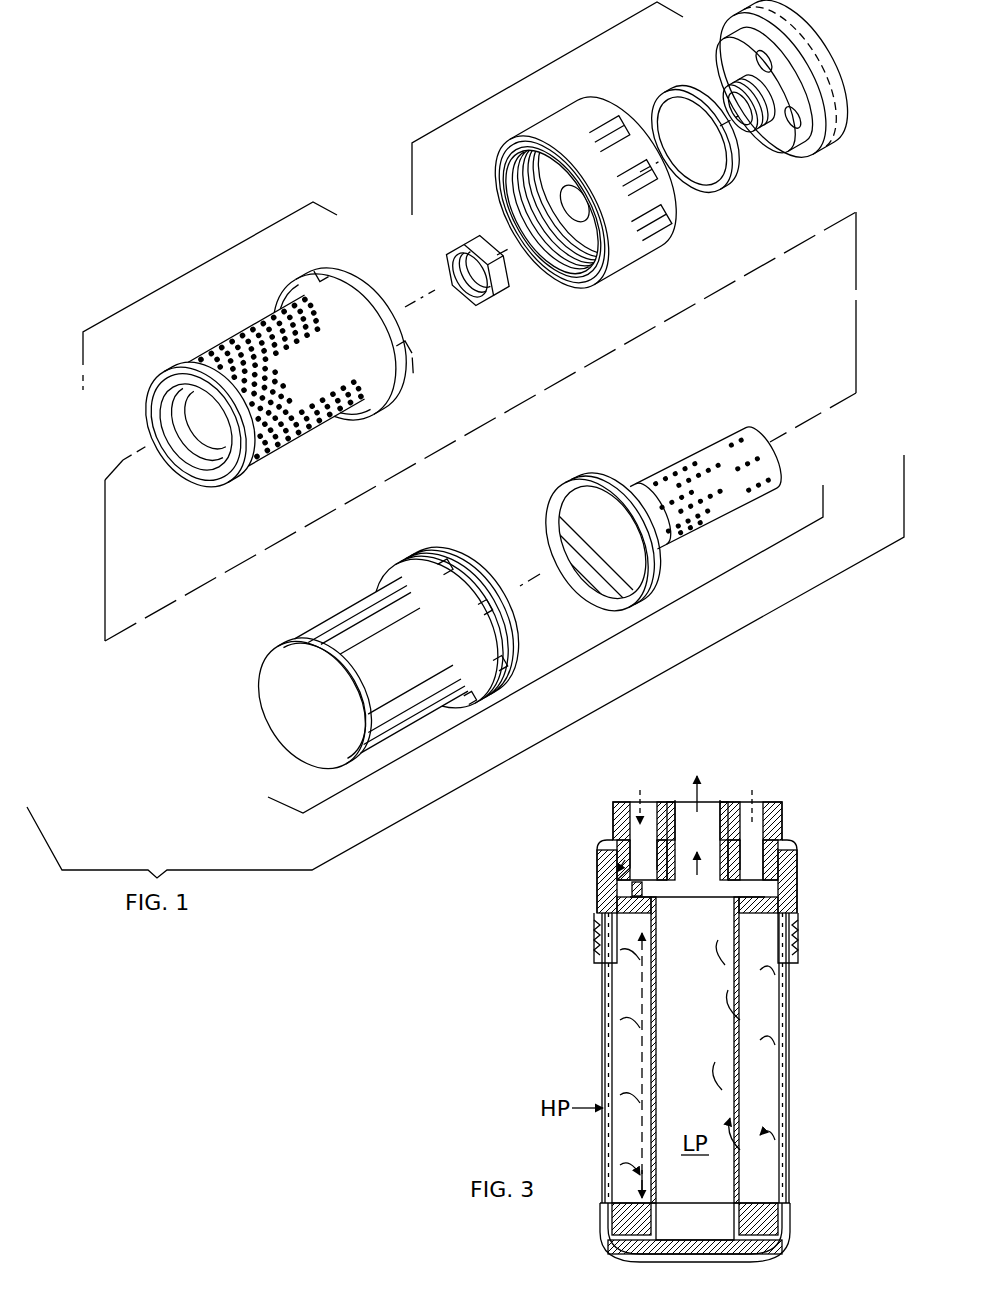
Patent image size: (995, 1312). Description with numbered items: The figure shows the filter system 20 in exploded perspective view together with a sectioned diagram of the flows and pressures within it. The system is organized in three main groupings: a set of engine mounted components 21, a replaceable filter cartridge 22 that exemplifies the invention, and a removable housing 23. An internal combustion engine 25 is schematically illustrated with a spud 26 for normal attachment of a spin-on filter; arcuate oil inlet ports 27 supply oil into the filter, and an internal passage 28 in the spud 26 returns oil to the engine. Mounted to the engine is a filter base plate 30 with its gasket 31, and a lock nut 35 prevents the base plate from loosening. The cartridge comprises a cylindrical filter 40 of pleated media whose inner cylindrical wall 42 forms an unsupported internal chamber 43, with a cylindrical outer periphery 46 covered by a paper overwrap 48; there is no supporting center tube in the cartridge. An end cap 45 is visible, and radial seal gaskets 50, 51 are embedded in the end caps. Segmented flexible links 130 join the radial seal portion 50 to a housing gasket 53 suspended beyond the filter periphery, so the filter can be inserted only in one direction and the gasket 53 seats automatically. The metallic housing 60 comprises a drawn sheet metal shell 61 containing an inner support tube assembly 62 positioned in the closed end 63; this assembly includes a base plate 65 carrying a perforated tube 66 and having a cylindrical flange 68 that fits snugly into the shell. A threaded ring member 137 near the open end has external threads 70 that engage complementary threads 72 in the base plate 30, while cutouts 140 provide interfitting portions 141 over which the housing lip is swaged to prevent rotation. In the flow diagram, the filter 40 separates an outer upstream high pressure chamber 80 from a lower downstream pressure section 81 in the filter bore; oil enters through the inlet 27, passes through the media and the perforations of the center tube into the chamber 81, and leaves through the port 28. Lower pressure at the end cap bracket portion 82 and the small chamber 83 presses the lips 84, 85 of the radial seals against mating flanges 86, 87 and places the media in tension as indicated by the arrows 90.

In FIG. 1, the filter system 20 is at (447, 499).
In FIG. 1, the engine mounted components 21 is at (511, 92).
In FIG. 1, the replaceable filter cartridge 22 is at (181, 279).
In FIG. 1, the removable housing 23 is at (576, 655).
In FIG. 1, the internal combustion engine 25 is at (778, 90).
In FIG. 1, the spud 26 is at (764, 90).
In FIG. 3, the spud 26 is at (696, 854).
In FIG. 1, the arcuate oil inlet ports 27 is at (798, 30).
In FIG. 3, the arcuate oil inlet ports 27 is at (652, 800).
In FIG. 1, the internal passage 28 is at (749, 103).
In FIG. 3, the internal passage 28 is at (707, 803).
In FIG. 1, the filter base plate 30 is at (586, 192).
In FIG. 1, the gasket 31 is at (645, 112).
In FIG. 1, the lock nut 35 is at (488, 300).
In FIG. 1, the cylindrical filter 40 is at (274, 381).
In FIG. 3, the cylindrical filter 40 is at (661, 1058).
In FIG. 1, the inner cylindrical wall 42 is at (195, 427).
In FIG. 1, the internal chamber 43 is at (191, 429).
In FIG. 1, the end cap 45 is at (199, 424).
In FIG. 1, the outer periphery 46 is at (280, 374).
In FIG. 3, the outer periphery 46 is at (610, 1042).
In FIG. 1, the paper overwrap 48 is at (310, 425).
In FIG. 1, the radial seal gasket 50 is at (348, 339).
In FIG. 3, the radial seal gasket 50 is at (765, 895).
In FIG. 1, the radial seal gasket 51 is at (200, 424).
In FIG. 3, the radial seal gasket 51 is at (695, 1244).
In FIG. 1, the housing gasket 53 is at (364, 330).
In FIG. 1, the metallic housing 60 is at (387, 661).
In FIG. 1, the formed sheet metal shell 61 is at (381, 665).
In FIG. 1, the inner support tube assembly 62 is at (708, 485).
In FIG. 1, the closed end 63 is at (315, 703).
In FIG. 1, the base plate 65 is at (661, 510).
In FIG. 1, the perforated tube 66 is at (656, 511).
In FIG. 1, the cylindrical flange 68 is at (623, 532).
In FIG. 1, the external threads 70 is at (456, 622).
In FIG. 1, the complementary threads 72 is at (530, 143).
In FIG. 3, the outer upstream high pressure chamber 80 is at (608, 1010).
In FIG. 3, the downstream pressure section 81 is at (678, 1030).
In FIG. 3, the end cap bracket portion 82 is at (693, 1065).
In FIG. 3, the small chamber 83 is at (645, 1248).
In FIG. 3, the lip of radial seal 84 is at (628, 889).
In FIG. 3, the lip of radial seal 85 is at (615, 1232).
In FIG. 3, the mating flange 86 is at (640, 893).
In FIG. 3, the mating flange 87 is at (648, 1222).
In FIG. 3, the tensile force arrows 90 is at (640, 965).
In FIG. 1, the segmented flexible links 130 is at (367, 320).
In FIG. 1, the threaded ring member 137 is at (446, 567).
In FIG. 1, the cutouts 140 is at (485, 680).
In FIG. 1, the interfitting portions 141 is at (485, 607).